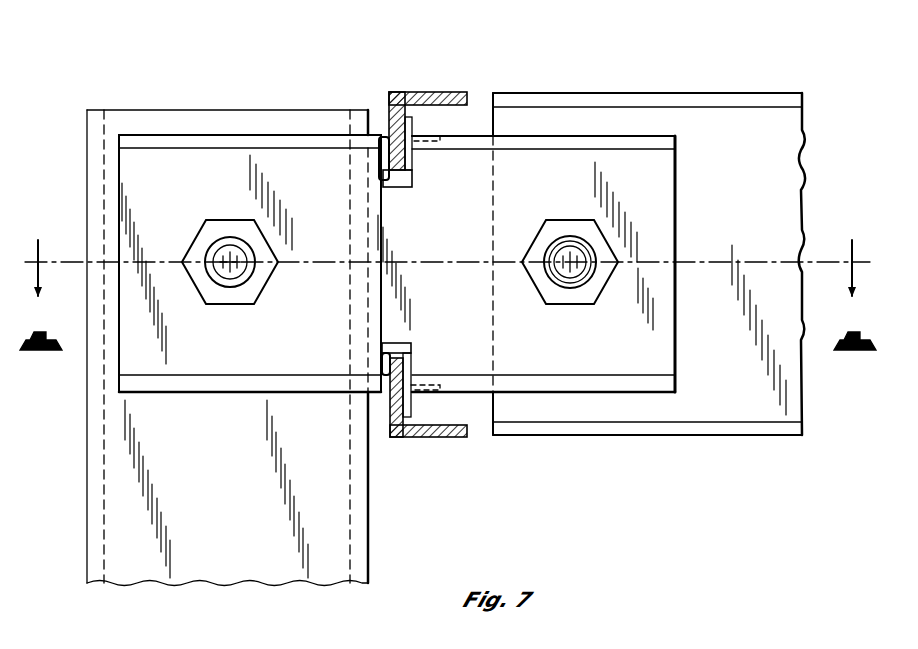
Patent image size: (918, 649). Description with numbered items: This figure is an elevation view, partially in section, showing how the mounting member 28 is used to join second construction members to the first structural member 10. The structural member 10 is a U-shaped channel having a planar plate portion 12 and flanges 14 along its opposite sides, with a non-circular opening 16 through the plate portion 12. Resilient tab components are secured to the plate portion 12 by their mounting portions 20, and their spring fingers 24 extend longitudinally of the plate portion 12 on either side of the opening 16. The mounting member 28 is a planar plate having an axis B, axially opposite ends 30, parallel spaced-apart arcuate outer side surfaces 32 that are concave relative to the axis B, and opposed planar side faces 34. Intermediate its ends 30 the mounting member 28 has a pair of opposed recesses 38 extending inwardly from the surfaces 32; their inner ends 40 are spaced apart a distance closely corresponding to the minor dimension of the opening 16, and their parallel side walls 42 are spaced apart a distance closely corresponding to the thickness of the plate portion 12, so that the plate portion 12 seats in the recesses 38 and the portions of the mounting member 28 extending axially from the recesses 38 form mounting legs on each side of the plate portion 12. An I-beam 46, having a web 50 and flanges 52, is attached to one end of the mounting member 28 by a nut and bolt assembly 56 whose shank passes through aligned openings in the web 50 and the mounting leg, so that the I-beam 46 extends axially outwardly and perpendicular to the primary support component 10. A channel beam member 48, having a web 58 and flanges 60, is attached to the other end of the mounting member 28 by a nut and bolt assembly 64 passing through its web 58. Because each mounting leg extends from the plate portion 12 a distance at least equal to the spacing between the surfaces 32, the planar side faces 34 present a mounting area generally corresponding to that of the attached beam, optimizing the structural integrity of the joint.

The structural member 10 is at (416, 86).
The plate portion 12 is at (400, 375).
The flanges 14 is at (407, 437).
The non-circular opening 16 is at (405, 190).
The mounting portion 20 is at (393, 120).
The spring fingers 24 is at (442, 138).
The mounting member 28 is at (692, 194).
The axially opposite ends 30 is at (120, 178).
The arcuate outer side surfaces 32 is at (215, 135).
The planar side faces 34 is at (660, 353).
The recesses 38 is at (390, 152).
The inner ends of recesses 40 is at (400, 360).
The recess side walls 42 is at (385, 175).
The I-beam 46 is at (815, 163).
The channel beam member 48 is at (130, 592).
The web 50 is at (790, 393).
The flanges 52 is at (735, 93).
The nut and bolt assembly 56 is at (572, 215).
The web 58 is at (246, 570).
The flanges 60 is at (95, 488).
The nut and bolt assembly 64 is at (228, 216).
The axis of mounting member B is at (403, 262).